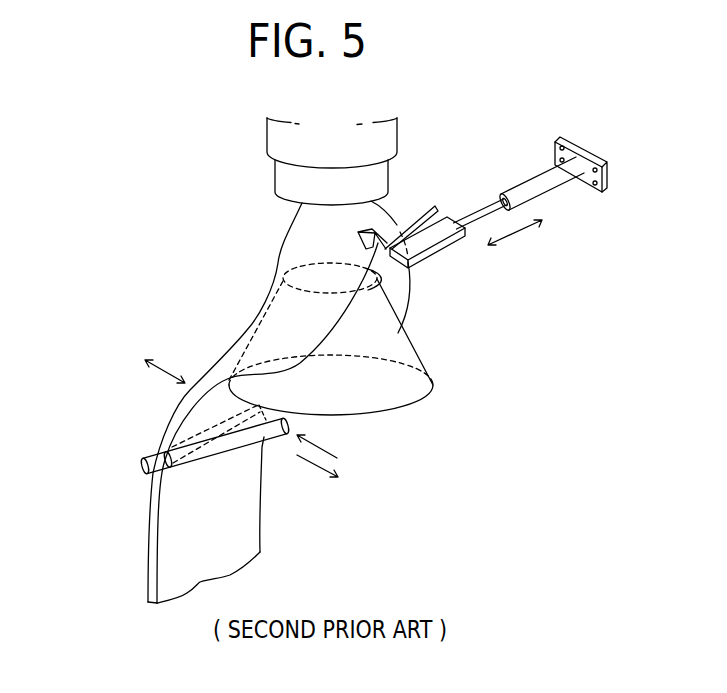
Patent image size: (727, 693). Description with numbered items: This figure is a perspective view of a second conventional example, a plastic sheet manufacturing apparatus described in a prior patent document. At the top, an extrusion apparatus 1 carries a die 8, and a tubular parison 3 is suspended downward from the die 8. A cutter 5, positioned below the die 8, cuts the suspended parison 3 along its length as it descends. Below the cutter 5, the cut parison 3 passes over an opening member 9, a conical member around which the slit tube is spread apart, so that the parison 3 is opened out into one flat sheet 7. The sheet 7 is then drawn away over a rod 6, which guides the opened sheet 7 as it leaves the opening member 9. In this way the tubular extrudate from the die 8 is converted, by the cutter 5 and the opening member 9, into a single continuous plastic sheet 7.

The extrusion apparatus 1 is at (280, 142).
The die 8 is at (283, 180).
The parison 3 is at (303, 243).
The cutter 5 is at (435, 210).
The opening member 9 is at (420, 355).
The guide rod 6 is at (148, 450).
The sheet 7 is at (260, 530).